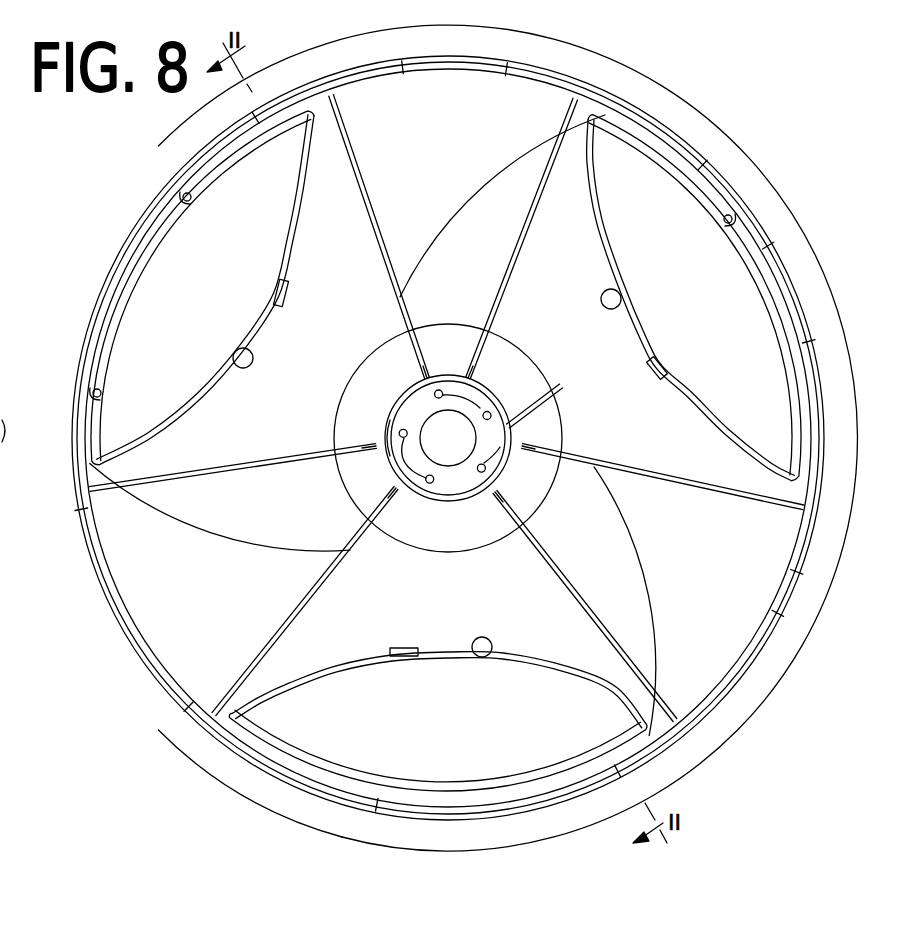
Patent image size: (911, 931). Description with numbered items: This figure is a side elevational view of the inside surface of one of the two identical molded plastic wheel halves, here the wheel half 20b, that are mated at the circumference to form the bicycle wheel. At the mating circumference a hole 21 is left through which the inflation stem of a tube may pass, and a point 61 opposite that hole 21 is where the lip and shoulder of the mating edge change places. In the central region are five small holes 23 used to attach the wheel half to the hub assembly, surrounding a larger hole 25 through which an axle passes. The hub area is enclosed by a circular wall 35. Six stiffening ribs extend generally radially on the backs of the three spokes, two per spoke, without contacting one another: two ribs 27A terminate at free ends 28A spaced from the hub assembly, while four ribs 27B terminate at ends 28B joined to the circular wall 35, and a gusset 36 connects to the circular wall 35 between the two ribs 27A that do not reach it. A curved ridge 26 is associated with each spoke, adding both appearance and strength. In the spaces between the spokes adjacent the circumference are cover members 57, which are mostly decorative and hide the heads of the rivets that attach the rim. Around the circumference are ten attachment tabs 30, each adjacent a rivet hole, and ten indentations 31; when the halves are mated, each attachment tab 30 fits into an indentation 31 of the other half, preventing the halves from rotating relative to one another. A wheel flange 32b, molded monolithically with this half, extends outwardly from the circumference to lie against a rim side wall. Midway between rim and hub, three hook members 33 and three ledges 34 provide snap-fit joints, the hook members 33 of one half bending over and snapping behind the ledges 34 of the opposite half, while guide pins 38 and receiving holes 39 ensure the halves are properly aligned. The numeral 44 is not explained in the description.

The wheel half 20b is at (592, 43).
The hole 21 is at (770, 246).
The small hole 23 is at (562, 385).
The larger hole 25 is at (447, 452).
The curved ridge 26 is at (506, 168).
The stiffening rib 27A is at (592, 102).
The stiffening rib 27B is at (348, 88).
The free end 28A is at (478, 365).
The end 28B is at (433, 352).
The attachment tab 30 is at (500, 58).
The indentation 31 is at (705, 160).
The wheel flange 32b is at (830, 325).
The hook member 33 is at (238, 356).
The ledge 34 is at (278, 292).
The circular wall 35 is at (470, 492).
The gusset 36 is at (448, 438).
The guide pin 38 is at (808, 292).
The receiving hole 39 is at (732, 220).
The tire 44 is at (15, 416).
The cover member 57 is at (800, 412).
The point 61 is at (153, 672).